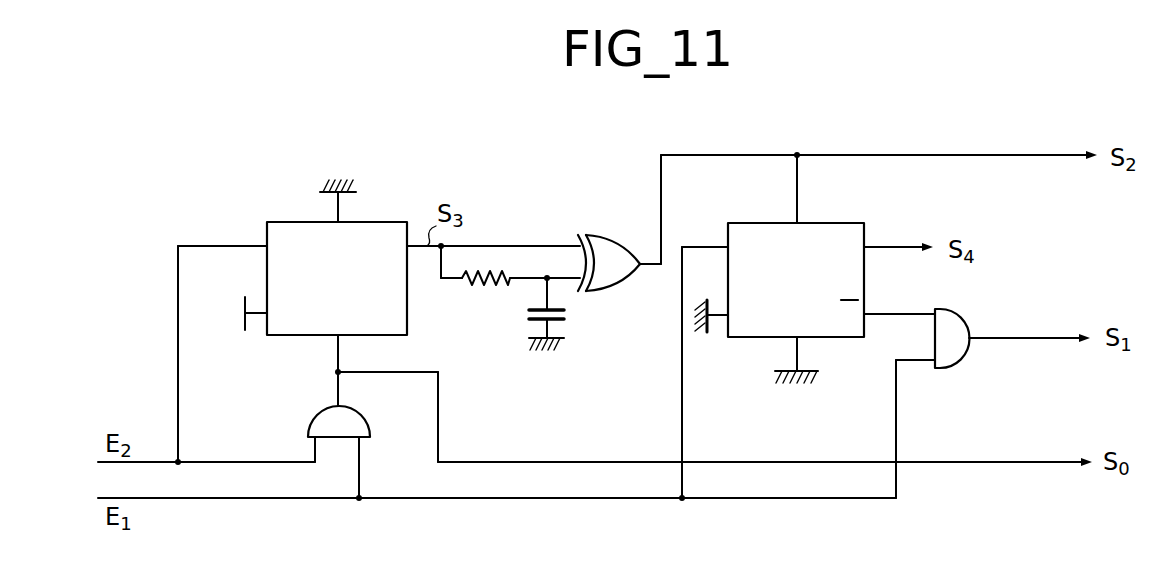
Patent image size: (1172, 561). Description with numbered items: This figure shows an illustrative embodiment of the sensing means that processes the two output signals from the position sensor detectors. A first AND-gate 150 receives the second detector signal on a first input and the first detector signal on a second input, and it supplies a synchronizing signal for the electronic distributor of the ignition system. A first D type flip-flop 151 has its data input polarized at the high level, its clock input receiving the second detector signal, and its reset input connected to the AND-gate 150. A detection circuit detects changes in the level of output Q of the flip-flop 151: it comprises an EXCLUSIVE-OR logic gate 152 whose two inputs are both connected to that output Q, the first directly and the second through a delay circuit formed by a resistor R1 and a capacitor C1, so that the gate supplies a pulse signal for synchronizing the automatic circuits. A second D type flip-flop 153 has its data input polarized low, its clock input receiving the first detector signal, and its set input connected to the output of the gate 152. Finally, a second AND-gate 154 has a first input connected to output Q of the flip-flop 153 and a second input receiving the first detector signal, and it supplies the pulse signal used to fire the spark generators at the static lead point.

The first AND-gate 150 is at (326, 408).
The first D type flip-flop 151 is at (286, 220).
The EXCLUSIVE-OR logic gate 152 is at (610, 237).
The second D type flip-flop 153 is at (766, 223).
The second AND-gate 154 is at (963, 359).
The resistor R1 is at (486, 283).
The capacitor C1 is at (551, 300).